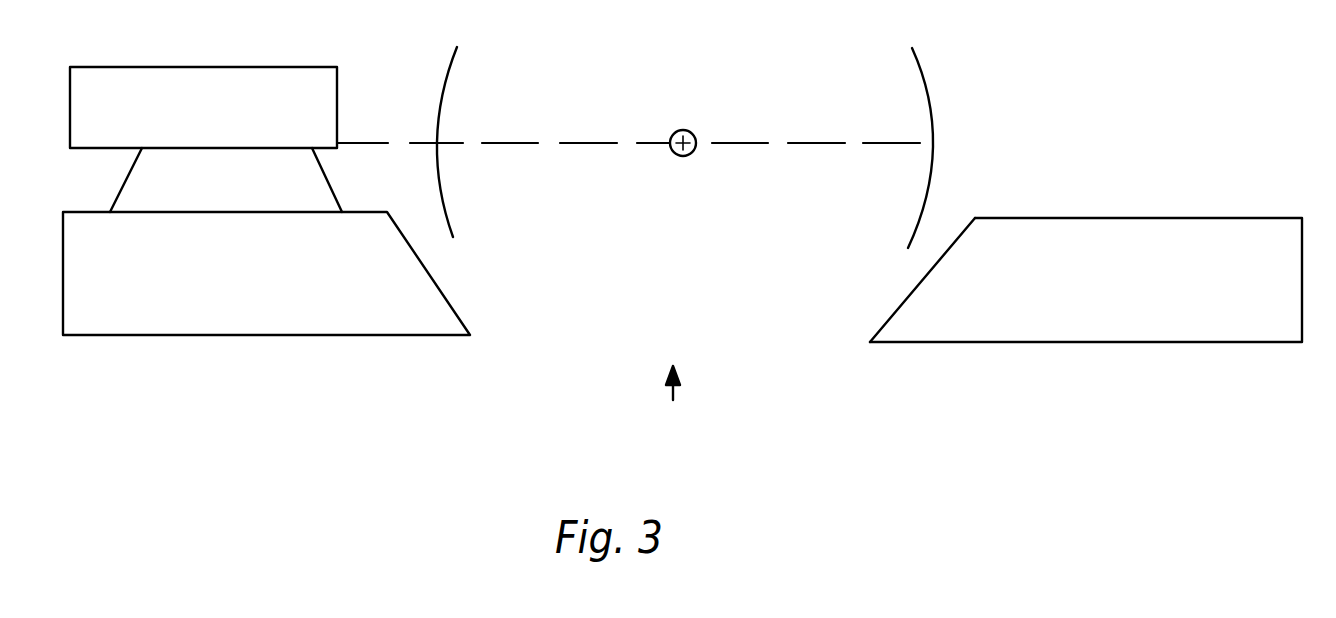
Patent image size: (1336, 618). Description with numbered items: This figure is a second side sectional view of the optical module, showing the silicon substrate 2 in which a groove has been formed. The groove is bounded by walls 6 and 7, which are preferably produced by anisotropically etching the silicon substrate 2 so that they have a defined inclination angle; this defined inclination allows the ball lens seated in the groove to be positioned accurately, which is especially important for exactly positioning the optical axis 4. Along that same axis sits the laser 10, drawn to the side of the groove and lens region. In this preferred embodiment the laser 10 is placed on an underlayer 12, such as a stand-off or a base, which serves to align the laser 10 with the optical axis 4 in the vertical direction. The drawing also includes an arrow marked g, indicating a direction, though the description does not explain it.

The laser 10 is at (118, 67).
The underlayer 12 is at (328, 183).
The wall 6 is at (420, 262).
The optical axis 4 is at (693, 154).
The silicon substrate 2 is at (1237, 222).
The wall 7 is at (916, 292).
The gravity direction g is at (668, 409).